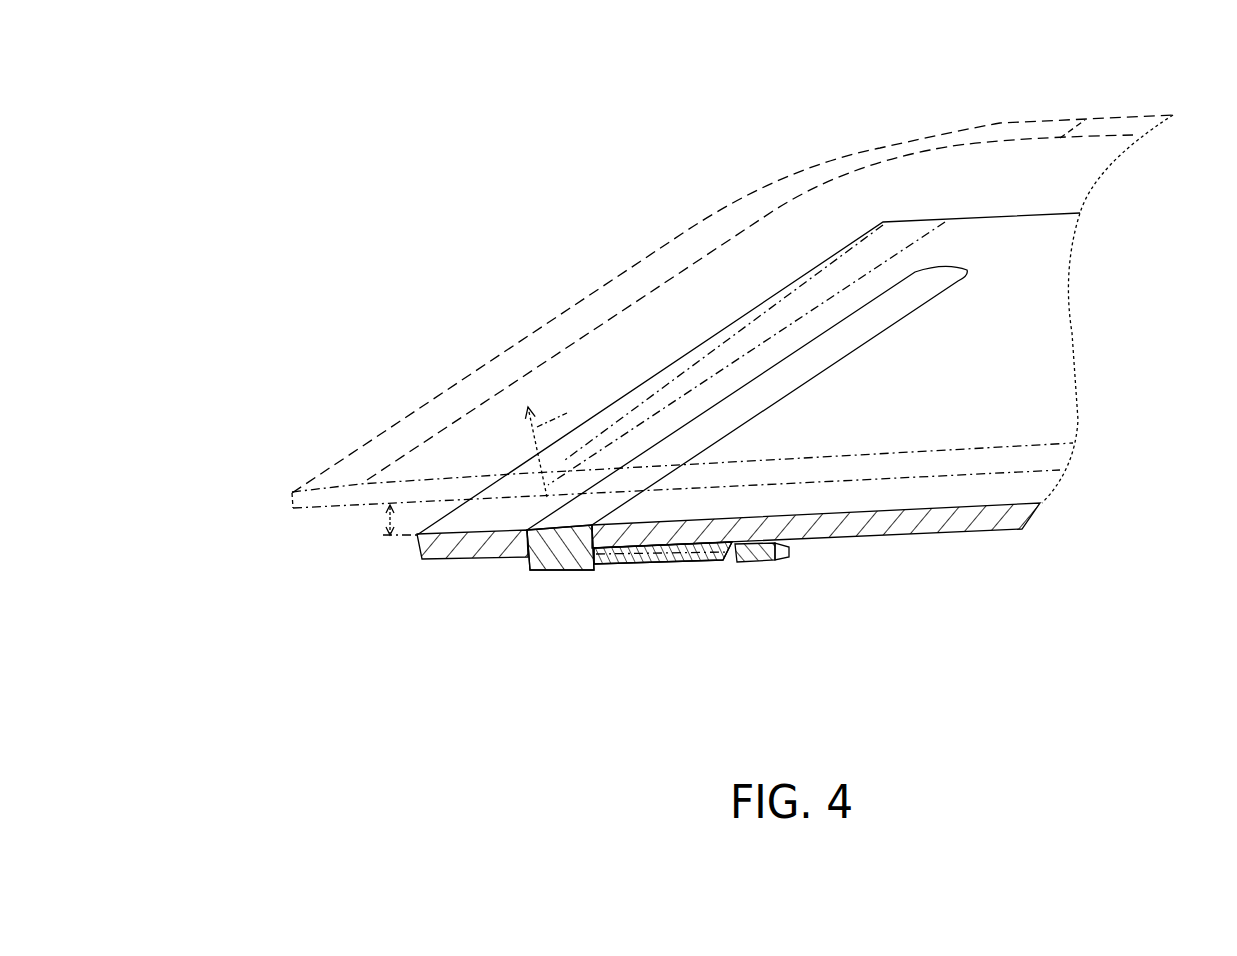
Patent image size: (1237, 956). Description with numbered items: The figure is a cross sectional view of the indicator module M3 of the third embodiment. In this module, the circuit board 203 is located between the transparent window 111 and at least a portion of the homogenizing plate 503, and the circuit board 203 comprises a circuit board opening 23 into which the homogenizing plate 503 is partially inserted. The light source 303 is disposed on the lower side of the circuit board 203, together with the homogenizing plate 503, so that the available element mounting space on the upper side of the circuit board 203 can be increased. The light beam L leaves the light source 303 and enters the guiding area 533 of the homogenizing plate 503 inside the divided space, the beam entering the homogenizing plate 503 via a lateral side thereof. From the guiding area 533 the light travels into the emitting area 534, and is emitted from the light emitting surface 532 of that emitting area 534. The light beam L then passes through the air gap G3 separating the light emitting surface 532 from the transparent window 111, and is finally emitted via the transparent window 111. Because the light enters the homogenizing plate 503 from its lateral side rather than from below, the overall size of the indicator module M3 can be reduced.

The transparent window 111 is at (925, 213).
The light emitting surface 532 is at (872, 313).
The circuit board opening 23 is at (933, 300).
The circuit board 203 is at (852, 530).
The homogenizing plate 503 is at (528, 561).
The emitting area 534 is at (596, 571).
The guiding area 533 is at (722, 566).
The light source 303 is at (753, 562).
The air gap G3 is at (378, 523).
The light beam L is at (552, 436).
The indicator module M3 is at (272, 88).